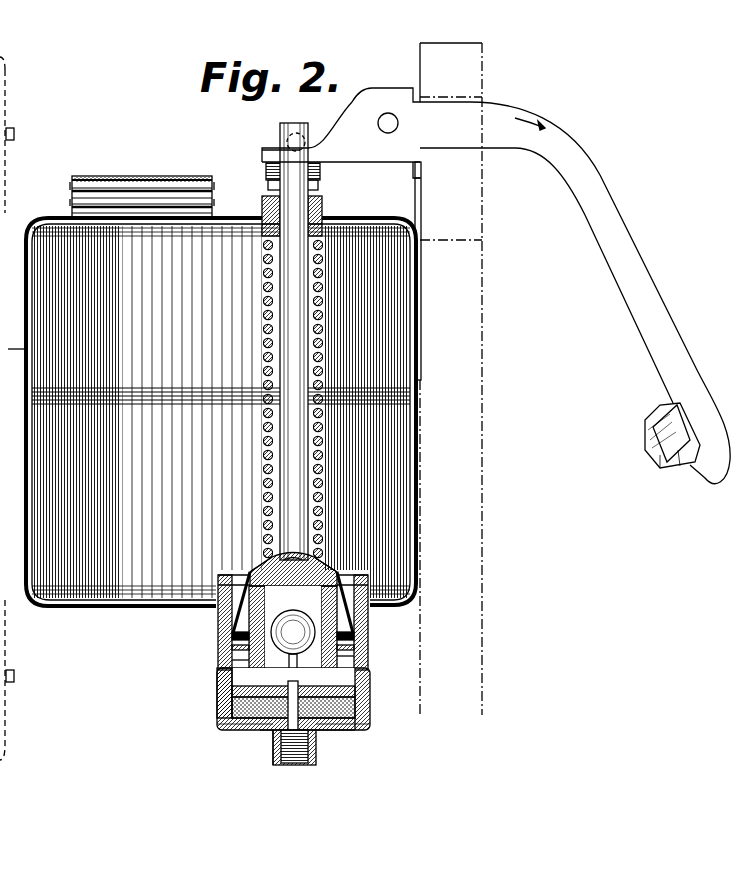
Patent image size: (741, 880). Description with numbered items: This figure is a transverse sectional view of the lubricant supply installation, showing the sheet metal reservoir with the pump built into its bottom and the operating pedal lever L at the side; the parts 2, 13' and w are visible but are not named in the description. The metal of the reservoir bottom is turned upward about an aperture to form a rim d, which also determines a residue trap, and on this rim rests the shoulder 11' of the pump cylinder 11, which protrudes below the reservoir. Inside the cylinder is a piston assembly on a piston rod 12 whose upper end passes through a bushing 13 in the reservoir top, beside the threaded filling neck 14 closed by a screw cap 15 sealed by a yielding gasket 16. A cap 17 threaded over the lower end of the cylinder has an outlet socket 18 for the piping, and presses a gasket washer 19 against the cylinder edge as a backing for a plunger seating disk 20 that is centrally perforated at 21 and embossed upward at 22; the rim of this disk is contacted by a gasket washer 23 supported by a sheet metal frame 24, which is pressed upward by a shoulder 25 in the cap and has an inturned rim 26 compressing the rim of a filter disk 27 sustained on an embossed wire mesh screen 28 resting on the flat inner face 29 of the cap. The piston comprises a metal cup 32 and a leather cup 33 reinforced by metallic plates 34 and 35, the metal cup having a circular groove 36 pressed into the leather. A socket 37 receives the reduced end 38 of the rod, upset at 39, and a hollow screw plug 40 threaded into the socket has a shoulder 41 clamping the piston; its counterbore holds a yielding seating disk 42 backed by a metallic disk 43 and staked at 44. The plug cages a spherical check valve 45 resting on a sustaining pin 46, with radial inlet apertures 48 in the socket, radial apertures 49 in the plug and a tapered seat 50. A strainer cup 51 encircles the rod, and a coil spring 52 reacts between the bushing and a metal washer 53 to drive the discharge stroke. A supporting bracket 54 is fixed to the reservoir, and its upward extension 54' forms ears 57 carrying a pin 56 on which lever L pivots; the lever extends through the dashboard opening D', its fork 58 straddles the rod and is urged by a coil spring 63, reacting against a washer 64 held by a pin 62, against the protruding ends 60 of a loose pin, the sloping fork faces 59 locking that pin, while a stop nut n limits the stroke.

The adjacent unit 2 is at (14, 350).
The pump cylinder 11 is at (217, 662).
The shoulder 11' is at (218, 606).
The piston rod 12 is at (292, 357).
The bushing 13 is at (277, 208).
The bushing flange 13' is at (273, 249).
The filling neck 14 is at (72, 206).
The screw cap 15 is at (72, 186).
The gasket 16 is at (132, 182).
The cap 17 is at (366, 722).
The outlet socket 18 is at (274, 742).
The gasket washer 19 is at (365, 682).
The plunger seating disk 20 is at (240, 724).
The central perforation 21 is at (308, 730).
The upward embossment 22 is at (293, 705).
The gasket washer 23 is at (232, 696).
The sheet metal frame 24 is at (368, 710).
The shoulder 25 is at (352, 726).
The inturned rim 26 is at (219, 720).
The filter disk 27 is at (248, 722).
The wire mesh screen 28 is at (288, 738).
The flat inner face 29 is at (255, 730).
The metal cup 32 is at (234, 643).
The leather cup 33 is at (238, 652).
The metallic plate 34 is at (360, 625).
The metallic plate 35 is at (355, 650).
The circular groove 36 is at (355, 638).
The socket 37 is at (355, 578).
The reduced end 38 is at (338, 568).
The upset extremity 39 is at (293, 629).
The screw plug member 40 is at (252, 572).
The shoulder 41 is at (250, 670).
The seating disk 42 is at (322, 730).
The metallic disk 43 is at (217, 700).
The staked rim 44 is at (337, 728).
The check valve 45 is at (336, 588).
The sustaining pin 46 is at (250, 677).
The inlet apertures 48 is at (242, 578).
The radial apertures 49 is at (348, 663).
The tapered seat 50 is at (276, 570).
The strainer cup 51 is at (236, 628).
The coil spring 52 is at (266, 293).
The metal washer 53 is at (280, 568).
The supporting bracket 54 is at (438, 271).
The upward extension 54' is at (472, 190).
The pin 56 is at (390, 115).
The ears 57 is at (420, 165).
The fork 58 is at (340, 130).
The sloping upper faces 59 is at (268, 148).
The protruding pin ends 60 is at (290, 140).
The pin 62 is at (286, 190).
The coil spring 63 is at (268, 170).
The washer 64 is at (316, 180).
The opening D' is at (500, 231).
The pedal lever L is at (648, 280).
The stop nut n is at (684, 468).
The wall line w is at (421, 327).
The rim d is at (222, 582).